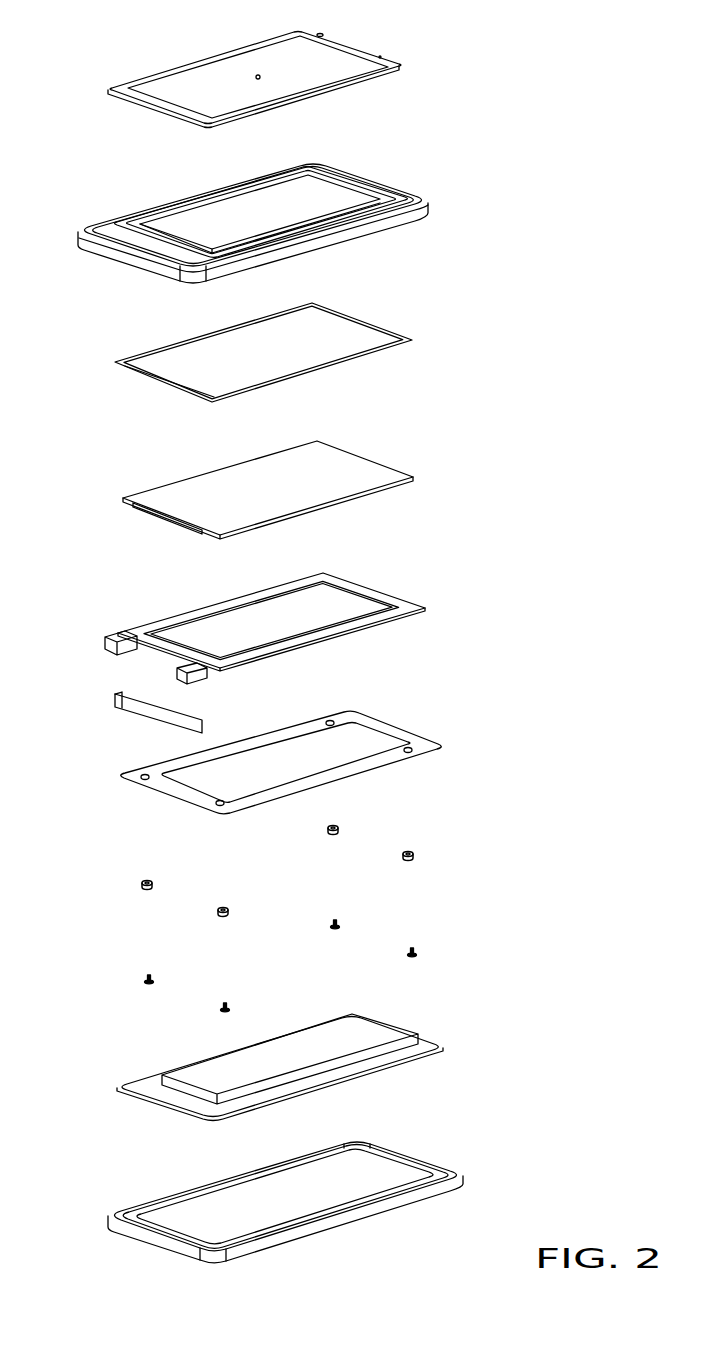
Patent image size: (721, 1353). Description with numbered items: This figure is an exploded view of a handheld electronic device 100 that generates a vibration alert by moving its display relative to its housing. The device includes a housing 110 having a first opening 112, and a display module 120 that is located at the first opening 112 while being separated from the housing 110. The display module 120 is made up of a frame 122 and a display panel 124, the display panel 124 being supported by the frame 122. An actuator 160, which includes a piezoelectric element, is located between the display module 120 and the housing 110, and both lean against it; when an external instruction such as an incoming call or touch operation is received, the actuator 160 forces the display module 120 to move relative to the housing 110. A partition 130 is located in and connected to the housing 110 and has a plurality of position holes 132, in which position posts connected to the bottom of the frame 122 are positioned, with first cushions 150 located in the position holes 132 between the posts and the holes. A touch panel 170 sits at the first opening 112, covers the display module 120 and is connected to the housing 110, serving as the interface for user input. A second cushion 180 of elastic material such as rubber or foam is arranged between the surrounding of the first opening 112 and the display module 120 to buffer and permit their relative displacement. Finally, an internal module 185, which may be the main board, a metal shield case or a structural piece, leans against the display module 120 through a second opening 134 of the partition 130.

The handheld electronic device 100 is at (470, 1261).
The housing 110 is at (234, 210).
The first opening 112 is at (345, 198).
The display module 120 is at (229, 548).
The frame 122 is at (352, 605).
The display panel 124 is at (352, 470).
The partition 130 is at (285, 743).
The position holes 132 is at (215, 803).
The second opening 134 is at (356, 737).
The first cushions 150 is at (142, 885).
The actuator 160 is at (142, 710).
The touch panel 170 is at (352, 60).
The second cushion 180 is at (160, 376).
The internal module 185 is at (386, 1028).